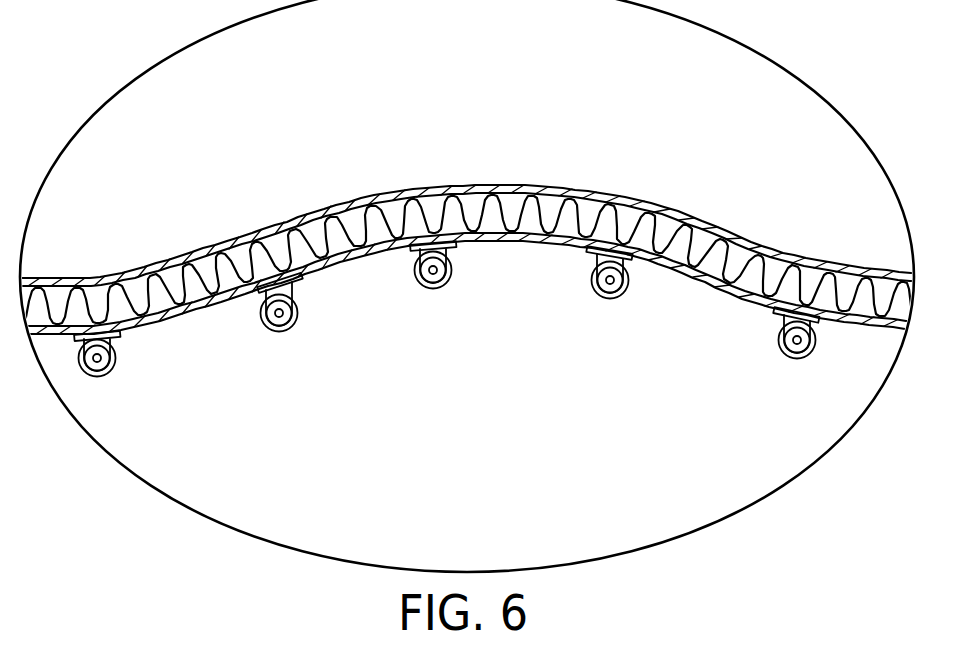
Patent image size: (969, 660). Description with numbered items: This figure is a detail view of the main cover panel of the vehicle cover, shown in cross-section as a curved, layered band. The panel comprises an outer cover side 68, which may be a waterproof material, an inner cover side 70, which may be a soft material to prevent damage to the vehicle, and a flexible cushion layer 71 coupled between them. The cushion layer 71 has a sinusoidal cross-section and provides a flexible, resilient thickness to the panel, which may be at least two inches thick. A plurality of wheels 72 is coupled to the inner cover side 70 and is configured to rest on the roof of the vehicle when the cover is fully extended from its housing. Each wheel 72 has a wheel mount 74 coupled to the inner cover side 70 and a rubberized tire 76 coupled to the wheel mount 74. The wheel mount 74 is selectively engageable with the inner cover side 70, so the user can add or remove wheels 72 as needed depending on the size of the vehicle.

The outer cover side 68 is at (645, 210).
The inner cover side 70 is at (699, 279).
The flexible cushion layer 71 is at (748, 245).
The wheels 72 is at (446, 347).
The wheel mount 74 is at (266, 326).
The rubberized tire 76 is at (298, 322).